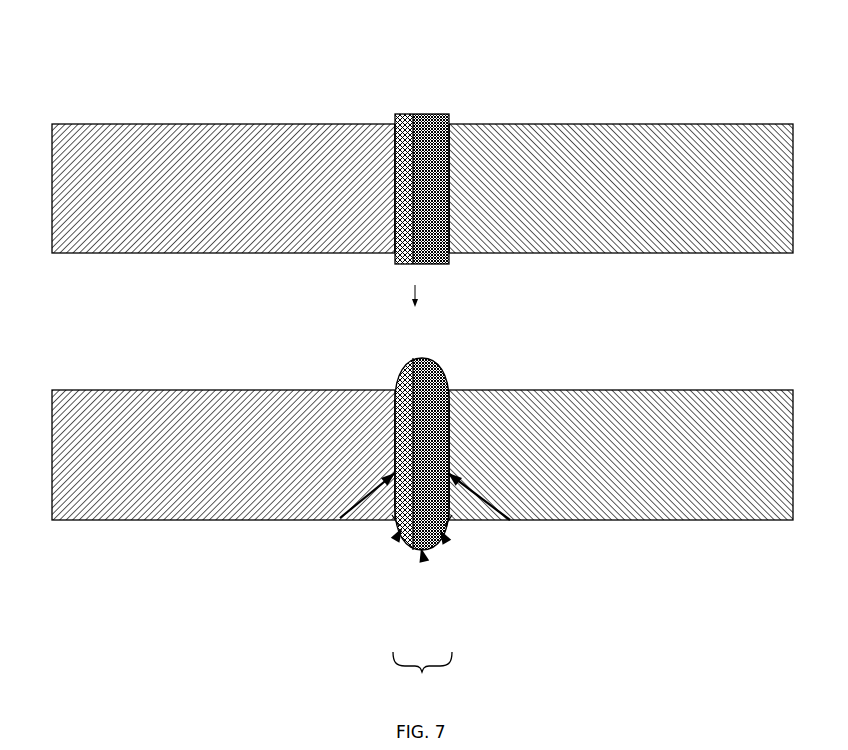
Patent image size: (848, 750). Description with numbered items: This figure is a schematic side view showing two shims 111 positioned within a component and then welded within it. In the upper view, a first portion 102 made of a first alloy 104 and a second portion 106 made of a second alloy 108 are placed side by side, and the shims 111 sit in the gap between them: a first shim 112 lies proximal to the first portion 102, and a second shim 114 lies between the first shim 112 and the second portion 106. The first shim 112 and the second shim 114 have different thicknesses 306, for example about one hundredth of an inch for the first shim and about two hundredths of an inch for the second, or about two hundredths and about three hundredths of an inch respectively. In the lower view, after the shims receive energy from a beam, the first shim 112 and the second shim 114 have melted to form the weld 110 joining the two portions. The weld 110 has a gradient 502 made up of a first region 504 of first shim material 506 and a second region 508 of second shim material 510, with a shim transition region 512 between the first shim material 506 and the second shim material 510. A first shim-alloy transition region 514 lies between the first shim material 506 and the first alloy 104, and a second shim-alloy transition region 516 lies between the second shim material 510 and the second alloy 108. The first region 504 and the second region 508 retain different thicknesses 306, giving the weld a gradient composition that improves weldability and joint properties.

The first portion 102 is at (100, 124).
The first alloy 104 is at (193, 138).
The second portion 106 is at (745, 124).
The second alloy 108 is at (640, 133).
The weld 110 is at (449, 332).
The shims 111 is at (429, 50).
The first shim 112 is at (406, 114).
The second shim 114 is at (431, 114).
The thicknesses 306 is at (402, 157).
The gradient 502 is at (422, 675).
The first region 504 is at (397, 537).
The first shim material 506 is at (396, 522).
The second region 508 is at (445, 538).
The second shim material 510 is at (446, 522).
The shim transition region 512 is at (424, 562).
The first shim-alloy transition region 514 is at (340, 518).
The second shim-alloy transition region 516 is at (510, 520).